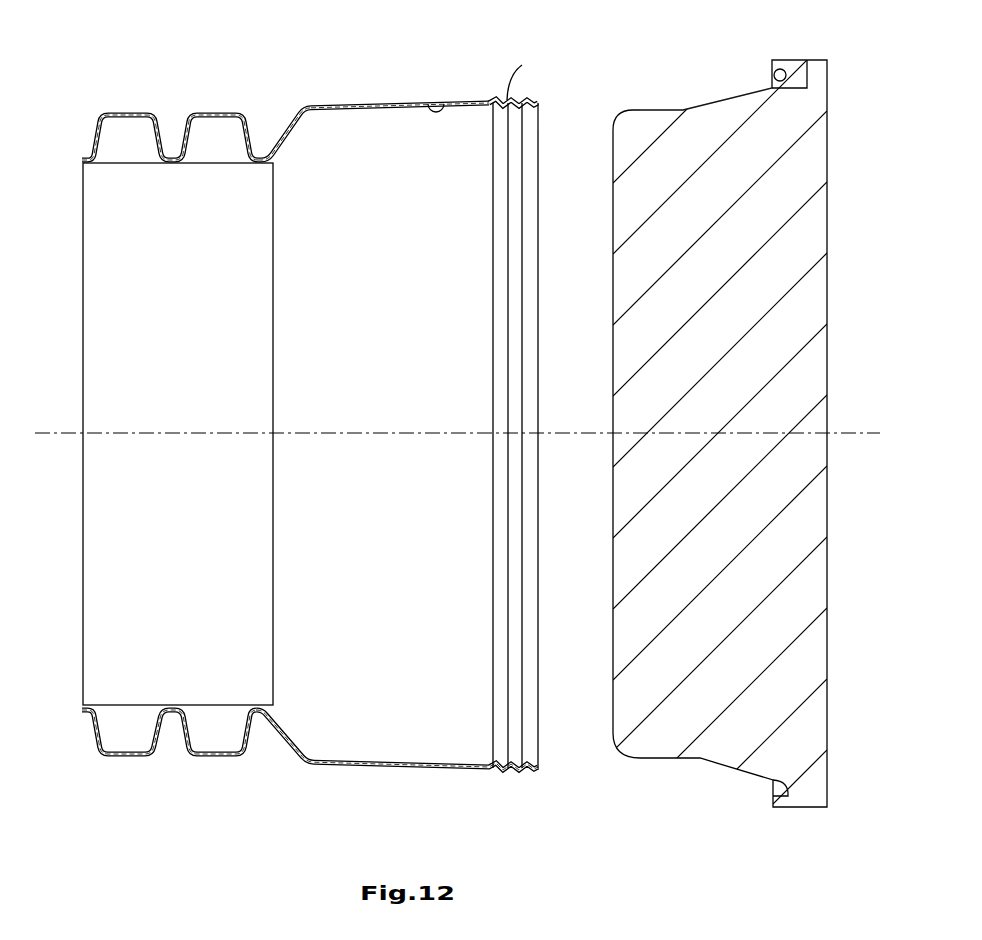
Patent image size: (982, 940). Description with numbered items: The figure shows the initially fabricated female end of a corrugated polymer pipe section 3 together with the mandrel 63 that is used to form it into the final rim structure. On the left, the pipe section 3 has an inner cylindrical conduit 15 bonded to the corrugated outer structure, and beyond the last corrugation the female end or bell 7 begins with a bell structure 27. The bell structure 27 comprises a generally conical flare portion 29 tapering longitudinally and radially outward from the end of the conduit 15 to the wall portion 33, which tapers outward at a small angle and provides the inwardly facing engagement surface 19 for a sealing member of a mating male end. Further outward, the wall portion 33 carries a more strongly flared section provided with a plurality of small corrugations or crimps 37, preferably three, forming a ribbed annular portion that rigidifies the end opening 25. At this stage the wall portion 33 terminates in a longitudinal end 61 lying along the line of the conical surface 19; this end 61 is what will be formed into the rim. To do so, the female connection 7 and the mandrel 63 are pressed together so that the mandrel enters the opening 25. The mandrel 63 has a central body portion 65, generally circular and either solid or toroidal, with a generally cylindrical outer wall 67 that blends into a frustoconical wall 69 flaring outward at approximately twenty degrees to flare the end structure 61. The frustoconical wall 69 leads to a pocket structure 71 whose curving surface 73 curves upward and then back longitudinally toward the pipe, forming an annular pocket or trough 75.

The pipe section 3 is at (247, 383).
The female end or bell 7 is at (425, 389).
The cylindrical conduit 15 is at (207, 163).
The engagement surface 19 is at (437, 100).
The opening 25 is at (526, 297).
The bell structure 27 is at (330, 107).
The conical flare portion 29 is at (289, 133).
The wall portion 33 is at (130, 113).
The corrugations or crimps 37 is at (490, 100).
The longitudinal end 61 is at (540, 108).
The mandrel 63 is at (717, 470).
The central body portion 65 is at (642, 468).
The cylindrical outer wall 67 is at (655, 108).
The frustoconical wall 69 is at (725, 100).
The pocket structure 71 is at (800, 70).
The curving surface 73 is at (798, 67).
The annular pocket or trough 75 is at (771, 76).